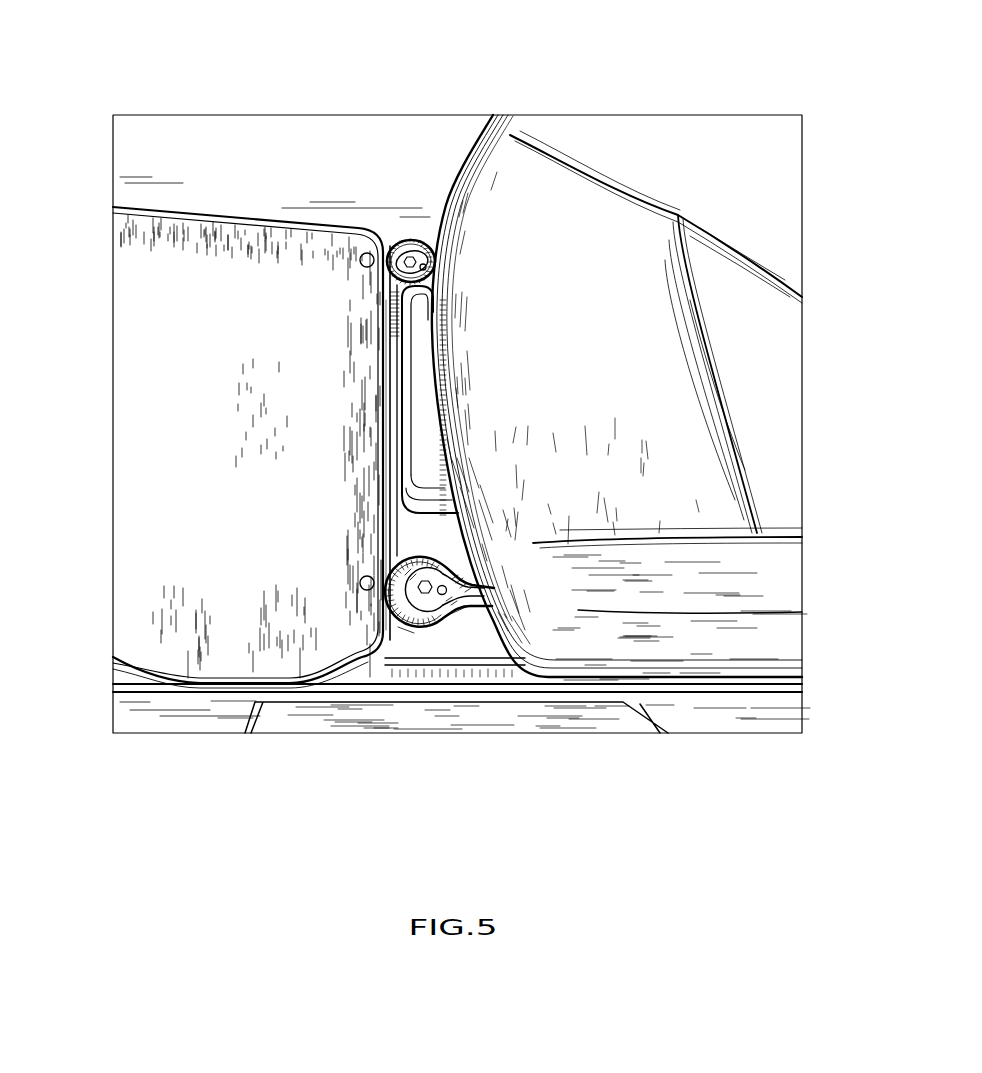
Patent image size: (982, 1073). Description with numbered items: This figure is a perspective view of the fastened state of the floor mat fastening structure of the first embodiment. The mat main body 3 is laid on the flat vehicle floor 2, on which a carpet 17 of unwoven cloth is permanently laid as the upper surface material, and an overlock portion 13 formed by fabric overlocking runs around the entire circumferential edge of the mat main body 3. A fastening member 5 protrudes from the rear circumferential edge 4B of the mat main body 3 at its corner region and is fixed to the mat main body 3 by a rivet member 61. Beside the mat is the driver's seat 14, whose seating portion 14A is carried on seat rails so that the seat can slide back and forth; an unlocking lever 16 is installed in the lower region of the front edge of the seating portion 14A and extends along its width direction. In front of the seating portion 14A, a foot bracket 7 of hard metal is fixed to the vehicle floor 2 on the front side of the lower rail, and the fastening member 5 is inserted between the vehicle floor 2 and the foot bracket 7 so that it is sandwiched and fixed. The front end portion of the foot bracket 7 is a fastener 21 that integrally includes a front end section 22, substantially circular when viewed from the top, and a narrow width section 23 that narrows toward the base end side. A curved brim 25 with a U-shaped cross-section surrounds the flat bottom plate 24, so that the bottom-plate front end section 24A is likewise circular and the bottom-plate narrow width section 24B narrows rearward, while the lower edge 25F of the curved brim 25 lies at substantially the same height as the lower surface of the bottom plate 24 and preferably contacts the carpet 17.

The mat main body 3 is at (257, 250).
The rivet member 61 is at (362, 252).
The fastening member 5 is at (392, 240).
The foot bracket 7 is at (364, 421).
The fastener 21 is at (410, 240).
The overlock portion 13 is at (380, 313).
The unlocking lever 16 is at (405, 339).
The vehicle floor 2 is at (219, 443).
The carpet 17 is at (393, 423).
The rear circumferential edge 4B is at (383, 456).
The bottom-plate front end section 24A is at (410, 575).
The front end section 22 is at (380, 577).
The bottom plate 24 is at (510, 682).
The bottom-plate narrow width section 24B is at (482, 590).
The curved brim 25 is at (455, 613).
The lower edge 25F is at (405, 625).
The narrow width section 23 is at (471, 604).
The driver's seat 14 is at (691, 137).
The seating portion 14A is at (776, 334).